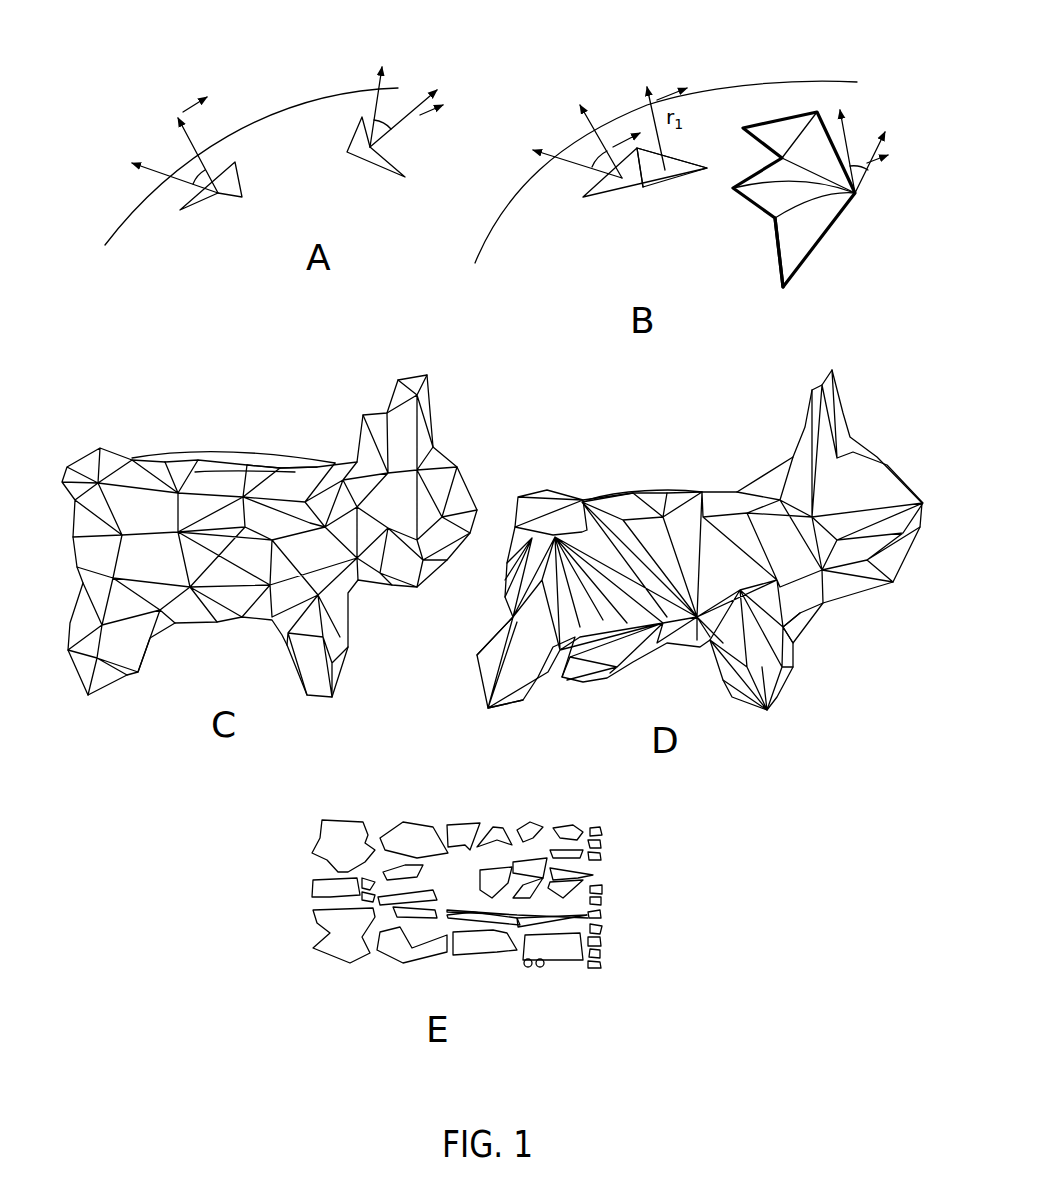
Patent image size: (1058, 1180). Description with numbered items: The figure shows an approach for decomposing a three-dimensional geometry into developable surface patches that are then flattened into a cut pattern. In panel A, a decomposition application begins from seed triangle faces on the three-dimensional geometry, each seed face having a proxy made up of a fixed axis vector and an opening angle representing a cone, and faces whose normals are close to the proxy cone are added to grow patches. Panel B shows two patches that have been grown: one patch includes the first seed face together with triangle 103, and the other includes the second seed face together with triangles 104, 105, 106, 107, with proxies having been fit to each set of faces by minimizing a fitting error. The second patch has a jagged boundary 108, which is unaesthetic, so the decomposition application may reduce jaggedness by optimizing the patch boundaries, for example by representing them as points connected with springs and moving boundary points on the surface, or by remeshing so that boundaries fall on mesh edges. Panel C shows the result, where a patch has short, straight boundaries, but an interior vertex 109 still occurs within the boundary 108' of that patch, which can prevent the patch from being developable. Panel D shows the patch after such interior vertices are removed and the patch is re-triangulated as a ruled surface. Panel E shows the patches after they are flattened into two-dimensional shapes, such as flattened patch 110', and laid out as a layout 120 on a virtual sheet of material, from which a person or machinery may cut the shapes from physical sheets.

The triangle 103 is at (677, 173).
The triangle 104 is at (803, 240).
The triangle 105 is at (778, 200).
The triangle 106 is at (770, 178).
The triangle 107 is at (775, 137).
The jagged boundary 108 is at (742, 262).
The boundary 108' is at (291, 436).
The vertex 109 is at (188, 460).
The flattened patch 110' is at (488, 964).
The layout 120 is at (602, 877).